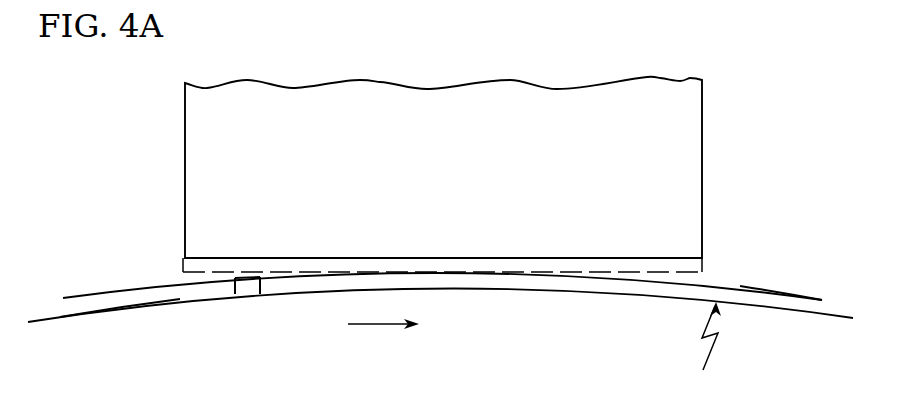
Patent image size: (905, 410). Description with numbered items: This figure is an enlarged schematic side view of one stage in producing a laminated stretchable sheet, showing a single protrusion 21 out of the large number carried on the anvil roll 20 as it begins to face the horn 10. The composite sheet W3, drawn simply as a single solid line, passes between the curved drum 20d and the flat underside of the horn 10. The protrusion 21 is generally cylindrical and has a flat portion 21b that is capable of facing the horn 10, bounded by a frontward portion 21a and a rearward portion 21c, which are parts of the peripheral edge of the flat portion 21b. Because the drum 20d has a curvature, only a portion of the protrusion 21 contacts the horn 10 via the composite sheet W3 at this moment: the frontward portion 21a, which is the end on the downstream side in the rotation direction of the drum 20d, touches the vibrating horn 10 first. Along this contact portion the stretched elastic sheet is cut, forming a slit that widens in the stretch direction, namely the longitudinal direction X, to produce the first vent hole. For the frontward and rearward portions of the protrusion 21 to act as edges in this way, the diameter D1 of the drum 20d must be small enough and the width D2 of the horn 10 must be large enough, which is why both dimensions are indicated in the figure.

The horn 10 is at (183, 163).
The anvil roll 20 is at (60, 315).
The drum 20d is at (120, 310).
The protrusion 21 is at (232, 293).
The frontward portion 21a is at (261, 281).
The flat portion 21b is at (247, 279).
The rearward portion 21c is at (236, 284).
The composite sheet W3 is at (769, 291).
The diameter of the drum D1 is at (712, 350).
The width of the horn D2 is at (702, 133).
The longitudinal direction X is at (380, 320).